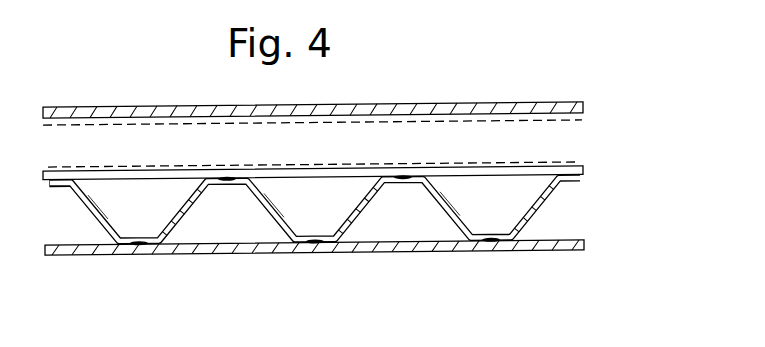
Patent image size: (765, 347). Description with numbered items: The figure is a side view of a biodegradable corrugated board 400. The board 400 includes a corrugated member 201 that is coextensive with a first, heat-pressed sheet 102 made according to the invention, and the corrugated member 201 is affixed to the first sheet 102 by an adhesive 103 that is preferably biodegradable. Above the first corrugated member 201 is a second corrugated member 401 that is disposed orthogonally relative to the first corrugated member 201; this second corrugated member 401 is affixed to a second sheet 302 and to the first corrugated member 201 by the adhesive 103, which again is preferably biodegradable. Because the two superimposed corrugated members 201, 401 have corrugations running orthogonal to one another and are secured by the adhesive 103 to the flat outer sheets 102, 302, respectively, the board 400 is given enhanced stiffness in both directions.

The biodegradable corrugated board 400 is at (355, 173).
The second sheet 302 is at (513, 101).
The second corrugated member 401 is at (560, 148).
The corrugated member 201 is at (521, 224).
The adhesive 103 is at (496, 254).
The first, heat-pressed sheet 102 is at (536, 253).